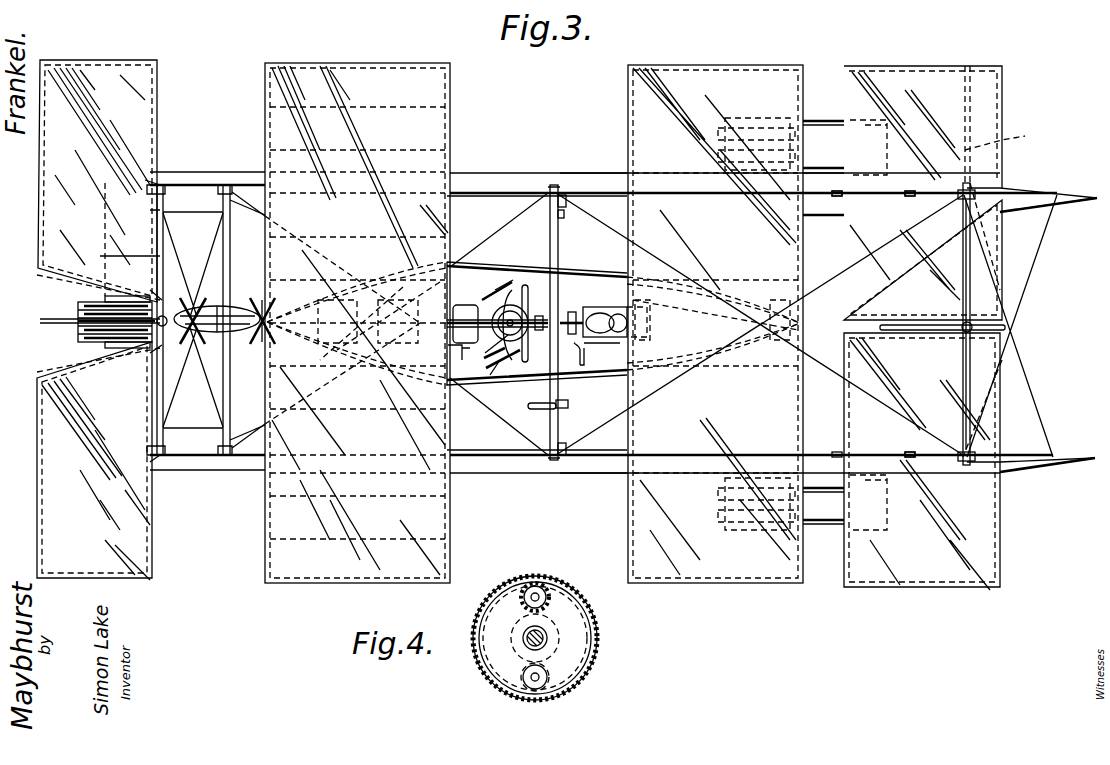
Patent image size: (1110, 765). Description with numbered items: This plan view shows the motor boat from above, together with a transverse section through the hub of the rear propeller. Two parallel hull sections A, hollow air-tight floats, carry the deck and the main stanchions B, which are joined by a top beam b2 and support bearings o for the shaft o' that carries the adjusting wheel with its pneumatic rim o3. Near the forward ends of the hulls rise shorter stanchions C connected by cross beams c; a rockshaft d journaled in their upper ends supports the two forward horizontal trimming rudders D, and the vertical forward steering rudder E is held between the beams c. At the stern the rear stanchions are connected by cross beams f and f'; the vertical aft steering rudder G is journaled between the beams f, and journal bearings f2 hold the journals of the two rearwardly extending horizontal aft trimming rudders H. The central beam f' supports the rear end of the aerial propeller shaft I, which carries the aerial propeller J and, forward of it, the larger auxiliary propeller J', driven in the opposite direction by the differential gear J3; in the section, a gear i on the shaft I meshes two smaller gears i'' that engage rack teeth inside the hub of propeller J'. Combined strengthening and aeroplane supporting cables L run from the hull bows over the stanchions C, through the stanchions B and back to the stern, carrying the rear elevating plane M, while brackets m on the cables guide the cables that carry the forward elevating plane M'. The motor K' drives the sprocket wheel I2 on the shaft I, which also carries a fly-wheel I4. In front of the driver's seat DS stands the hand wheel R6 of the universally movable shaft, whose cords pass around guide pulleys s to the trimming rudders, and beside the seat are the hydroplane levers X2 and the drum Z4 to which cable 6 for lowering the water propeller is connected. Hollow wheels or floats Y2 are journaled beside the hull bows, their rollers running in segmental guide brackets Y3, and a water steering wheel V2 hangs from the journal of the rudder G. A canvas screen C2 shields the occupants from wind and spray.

In FIG. 3, the horizontal aft trimming rudders H is at (97, 320).
In FIG. 3, the hull sections A is at (222, 172).
In FIG. 3, the aerial propeller J is at (288, 320).
In FIG. 3, the auxiliary propeller J' is at (224, 301).
In FIG. 3, the vertical aft steering rudder G is at (70, 326).
In FIG. 3, the water steering wheel V2 is at (95, 304).
In FIG. 3, the cross beams f is at (130, 233).
In FIG. 3, the journal bearings f2 is at (158, 178).
In FIG. 3, the cross beams f' is at (247, 320).
In FIG. 3, the rear elevating plane M is at (357, 323).
In FIG. 3, the combined strengthening and aeroplane supporting cables L is at (478, 186).
In FIG. 3, the main stanchions B is at (556, 185).
In FIG. 3, the screen C2 is at (612, 290).
In FIG. 3, the driver's seat DS is at (458, 308).
In FIG. 3, the operating hand wheel R6 is at (516, 292).
In FIG. 3, the operating levers X2 is at (498, 285).
In FIG. 3, the top beam b2 is at (530, 270).
In FIG. 3, the sprocket wheel I2 is at (571, 312).
In FIG. 3, the motor K' is at (610, 322).
In FIG. 3, the fly-wheel I4 is at (530, 385).
In FIG. 3, the segmental guide brackets Y3 is at (498, 380).
In FIG. 3, the drum Z4 is at (452, 355).
In FIG. 3, the bearings o is at (581, 325).
In FIG. 3, the shaft o' is at (582, 233).
In FIG. 3, the flexible pneumatic rim o3 is at (570, 405).
In FIG. 3, the forward elevating plane M' is at (715, 324).
In FIG. 3, the hollow wheels or floats Y2 is at (740, 118).
In FIG. 3, the brackets m is at (833, 198).
In FIG. 3, the guide pulleys s is at (908, 197).
In FIG. 3, the cable 6 is at (905, 452).
In FIG. 3, the forward horizontal trimming rudders D is at (923, 328).
In FIG. 3, the rockshaft d is at (1002, 138).
In FIG. 3, the stanchions C is at (960, 190).
In FIG. 3, the cross beams c is at (968, 258).
In FIG. 3, the vertical forward steering rudder E is at (905, 325).
In FIG. 4, the aerial propeller shaft I is at (528, 642).
In FIG. 4, the differential gear J3 is at (555, 622).
In FIG. 4, the gear i is at (504, 596).
In FIG. 4, the smaller gears i'' is at (516, 639).